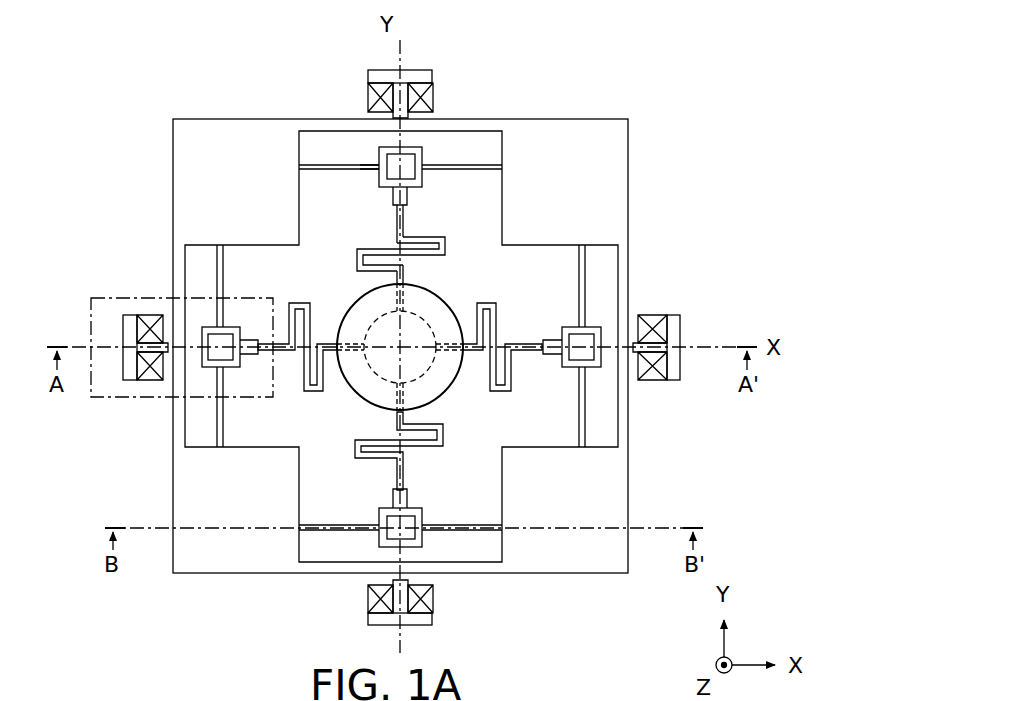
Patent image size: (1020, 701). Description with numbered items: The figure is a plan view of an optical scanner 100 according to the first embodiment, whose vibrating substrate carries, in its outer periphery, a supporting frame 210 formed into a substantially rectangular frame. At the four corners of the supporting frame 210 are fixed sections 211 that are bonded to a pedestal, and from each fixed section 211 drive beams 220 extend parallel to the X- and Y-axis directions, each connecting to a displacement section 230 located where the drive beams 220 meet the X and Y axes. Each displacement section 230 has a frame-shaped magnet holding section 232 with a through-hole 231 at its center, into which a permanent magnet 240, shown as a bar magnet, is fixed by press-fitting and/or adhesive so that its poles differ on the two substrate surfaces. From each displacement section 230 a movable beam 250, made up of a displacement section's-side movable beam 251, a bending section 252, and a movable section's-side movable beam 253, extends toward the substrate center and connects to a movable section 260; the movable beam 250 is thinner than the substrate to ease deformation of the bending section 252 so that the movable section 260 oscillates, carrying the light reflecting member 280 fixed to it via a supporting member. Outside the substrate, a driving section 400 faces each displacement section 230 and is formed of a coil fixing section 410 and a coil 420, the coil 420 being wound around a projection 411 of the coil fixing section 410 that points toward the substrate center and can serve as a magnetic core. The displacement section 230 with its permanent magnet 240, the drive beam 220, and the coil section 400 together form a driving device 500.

The optical scanner 100 is at (673, 31).
The supporting frame 210 is at (568, 574).
The fixed section 211 is at (618, 482).
The drive beam 220 is at (343, 167).
The displacement section 230 is at (430, 151).
The through-hole 231 is at (426, 177).
The magnet holding section 232 is at (377, 157).
The permanent magnet 240 is at (393, 175).
The movable beam 250 is at (722, 158).
The displacement section's-side movable beam 251 is at (405, 225).
The bending section 252 is at (425, 246).
The movable section's-side movable beam 253 is at (405, 275).
The movable section 260 is at (355, 310).
The light reflecting member 280 is at (350, 395).
The driving section 400 is at (690, 301).
The coil fixing section 410 is at (676, 332).
The projection 411 is at (648, 380).
The coil 420 is at (658, 380).
The driving device 500 is at (138, 297).